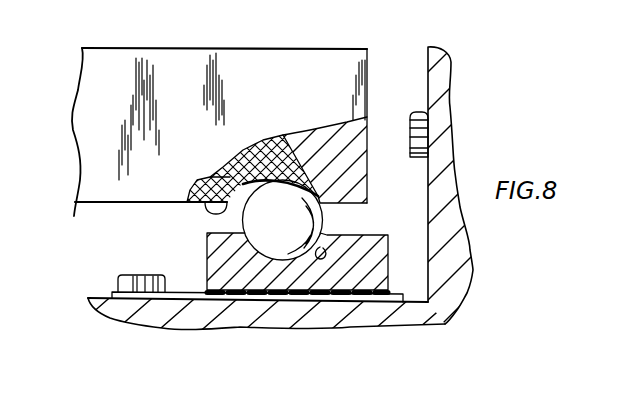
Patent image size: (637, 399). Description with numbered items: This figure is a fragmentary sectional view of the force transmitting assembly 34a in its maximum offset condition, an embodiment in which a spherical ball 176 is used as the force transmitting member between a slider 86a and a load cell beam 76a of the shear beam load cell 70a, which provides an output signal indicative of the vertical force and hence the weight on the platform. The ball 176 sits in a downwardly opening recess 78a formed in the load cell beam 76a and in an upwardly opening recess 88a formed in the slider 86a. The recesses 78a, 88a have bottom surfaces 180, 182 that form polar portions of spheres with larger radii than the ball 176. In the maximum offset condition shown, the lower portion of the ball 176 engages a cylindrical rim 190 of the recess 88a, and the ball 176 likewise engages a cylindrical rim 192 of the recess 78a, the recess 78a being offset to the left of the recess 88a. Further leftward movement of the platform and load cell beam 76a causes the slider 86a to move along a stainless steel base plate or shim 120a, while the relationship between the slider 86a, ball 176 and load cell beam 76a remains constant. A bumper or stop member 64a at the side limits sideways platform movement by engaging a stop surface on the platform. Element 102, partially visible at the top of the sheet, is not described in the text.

The shear beam load cell 70a is at (186, 48).
The load cell beam 76a is at (263, 62).
The force transmitting assembly 34a is at (350, 36).
The bottom surface of recess 180 is at (271, 164).
The cylindrical rim of recess 192 is at (208, 172).
The downwardly opening recess 78a is at (243, 183).
The spherical ball 176 is at (246, 220).
The upwardly opening recess 88a is at (323, 222).
The cylindrical rim of recess 190 is at (337, 250).
The bottom surface of recess 182 is at (337, 272).
The base plate 120a is at (130, 295).
The slider 86a is at (206, 264).
The stop member 64a is at (428, 131).
The element 102 is at (264, 4).